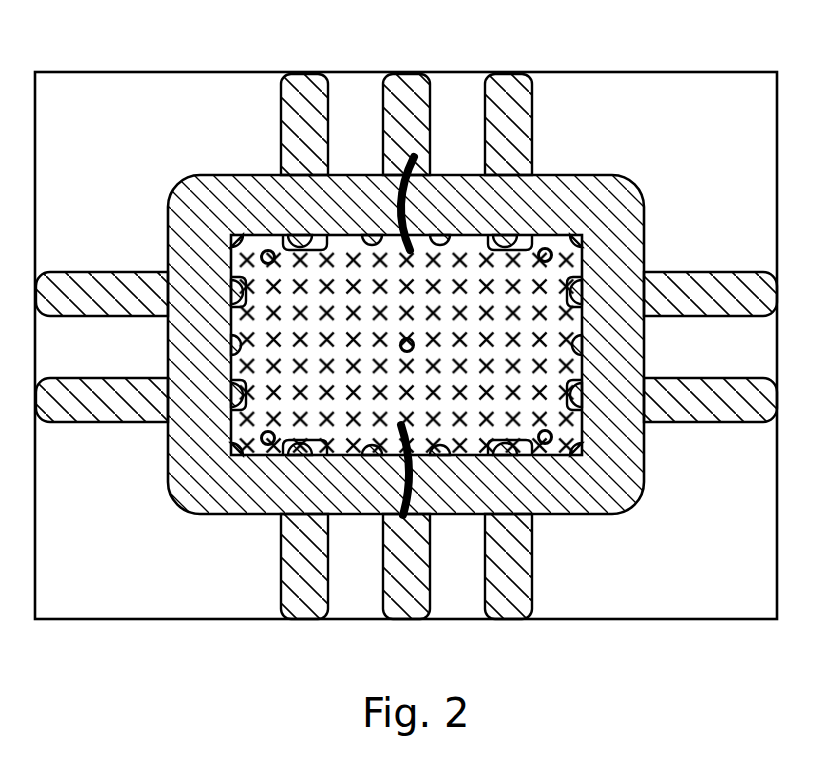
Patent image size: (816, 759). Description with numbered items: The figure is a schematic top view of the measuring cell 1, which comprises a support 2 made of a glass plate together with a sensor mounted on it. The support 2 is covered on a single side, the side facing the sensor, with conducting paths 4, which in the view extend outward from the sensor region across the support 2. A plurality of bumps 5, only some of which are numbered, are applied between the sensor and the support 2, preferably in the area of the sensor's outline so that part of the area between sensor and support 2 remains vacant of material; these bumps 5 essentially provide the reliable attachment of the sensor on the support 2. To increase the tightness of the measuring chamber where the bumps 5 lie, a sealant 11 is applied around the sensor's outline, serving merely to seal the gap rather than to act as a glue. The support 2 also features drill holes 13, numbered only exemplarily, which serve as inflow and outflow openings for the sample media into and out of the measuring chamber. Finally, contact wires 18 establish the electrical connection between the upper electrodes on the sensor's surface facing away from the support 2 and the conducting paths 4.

The measuring cell 1 is at (405, 364).
The support 2 is at (693, 600).
The conducting paths 4 is at (510, 583).
The bumps 5 is at (457, 423).
The sealant 11 is at (608, 202).
The drill holes 13 is at (545, 445).
The contact wires 18 is at (390, 207).